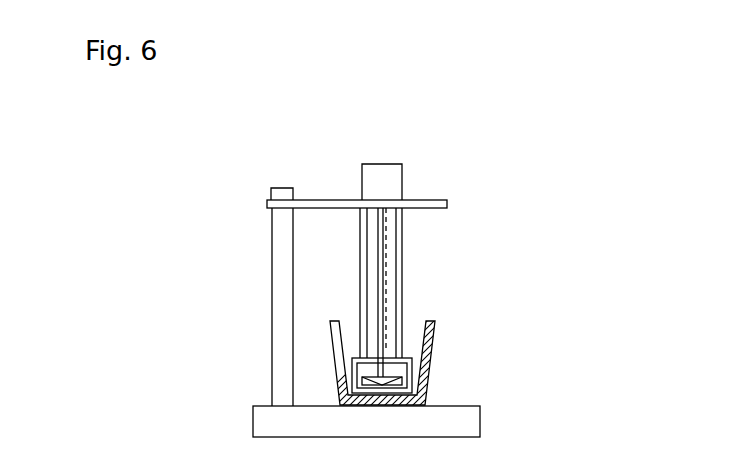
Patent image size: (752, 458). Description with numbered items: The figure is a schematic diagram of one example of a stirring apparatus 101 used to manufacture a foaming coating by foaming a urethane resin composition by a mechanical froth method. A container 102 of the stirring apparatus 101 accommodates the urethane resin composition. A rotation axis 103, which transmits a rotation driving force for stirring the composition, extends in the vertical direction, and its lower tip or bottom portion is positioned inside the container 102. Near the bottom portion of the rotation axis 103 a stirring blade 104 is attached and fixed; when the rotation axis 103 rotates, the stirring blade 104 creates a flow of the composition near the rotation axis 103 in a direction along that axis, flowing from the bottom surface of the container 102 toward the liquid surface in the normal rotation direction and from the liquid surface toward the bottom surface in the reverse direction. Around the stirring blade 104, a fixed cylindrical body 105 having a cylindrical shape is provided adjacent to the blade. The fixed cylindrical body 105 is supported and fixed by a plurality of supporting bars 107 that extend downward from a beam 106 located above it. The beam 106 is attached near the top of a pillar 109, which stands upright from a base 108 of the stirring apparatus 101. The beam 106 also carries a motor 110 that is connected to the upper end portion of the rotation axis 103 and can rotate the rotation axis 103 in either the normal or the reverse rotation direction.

The stirring apparatus 101 is at (438, 180).
The container 102 is at (430, 367).
The rotation axis 103 is at (382, 234).
The stirring blade 104 is at (399, 370).
The fixed cylindrical body 105 is at (356, 368).
The beam 106 is at (310, 200).
The supporting bars 107 is at (366, 275).
The base 108 is at (265, 426).
The pillar 109 is at (277, 362).
The motor 110 is at (383, 173).